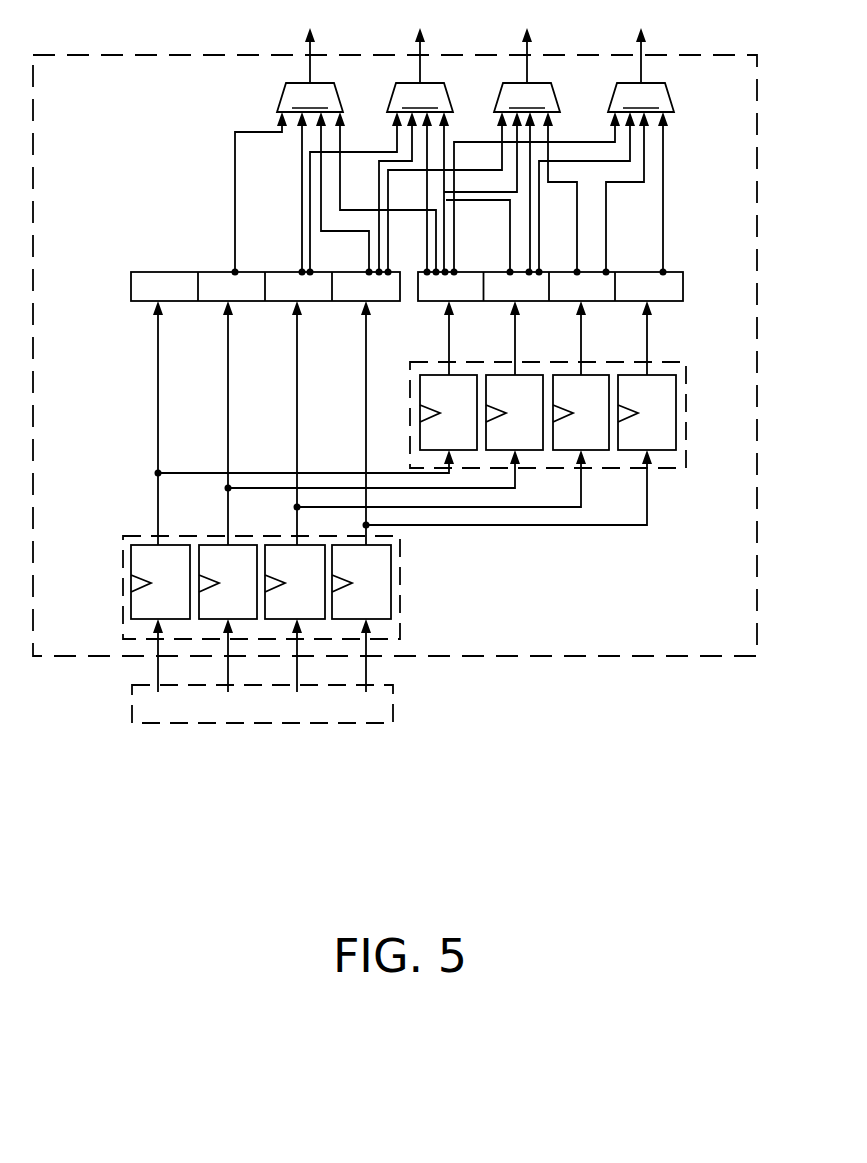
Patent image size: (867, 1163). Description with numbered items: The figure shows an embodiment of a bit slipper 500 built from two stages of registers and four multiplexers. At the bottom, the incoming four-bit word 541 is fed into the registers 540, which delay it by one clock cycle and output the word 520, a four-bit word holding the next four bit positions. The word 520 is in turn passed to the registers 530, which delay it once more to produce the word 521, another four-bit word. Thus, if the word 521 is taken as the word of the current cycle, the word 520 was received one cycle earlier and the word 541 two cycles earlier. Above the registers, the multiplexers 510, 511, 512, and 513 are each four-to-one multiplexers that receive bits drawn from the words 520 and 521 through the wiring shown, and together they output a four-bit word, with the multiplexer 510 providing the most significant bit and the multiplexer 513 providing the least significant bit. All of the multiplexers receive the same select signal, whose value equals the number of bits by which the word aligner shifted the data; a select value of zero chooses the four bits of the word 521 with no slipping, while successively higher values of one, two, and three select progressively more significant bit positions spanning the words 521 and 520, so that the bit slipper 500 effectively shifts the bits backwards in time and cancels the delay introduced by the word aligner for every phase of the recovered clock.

The bit slipper 500 is at (758, 443).
The multiplexer 510 is at (310, 77).
The multiplexer 511 is at (420, 77).
The multiplexer 512 is at (527, 77).
The multiplexer 513 is at (641, 77).
The word 520 is at (131, 291).
The word 521 is at (684, 285).
The registers 530 is at (686, 413).
The registers 540 is at (123, 583).
The word 541 is at (393, 694).